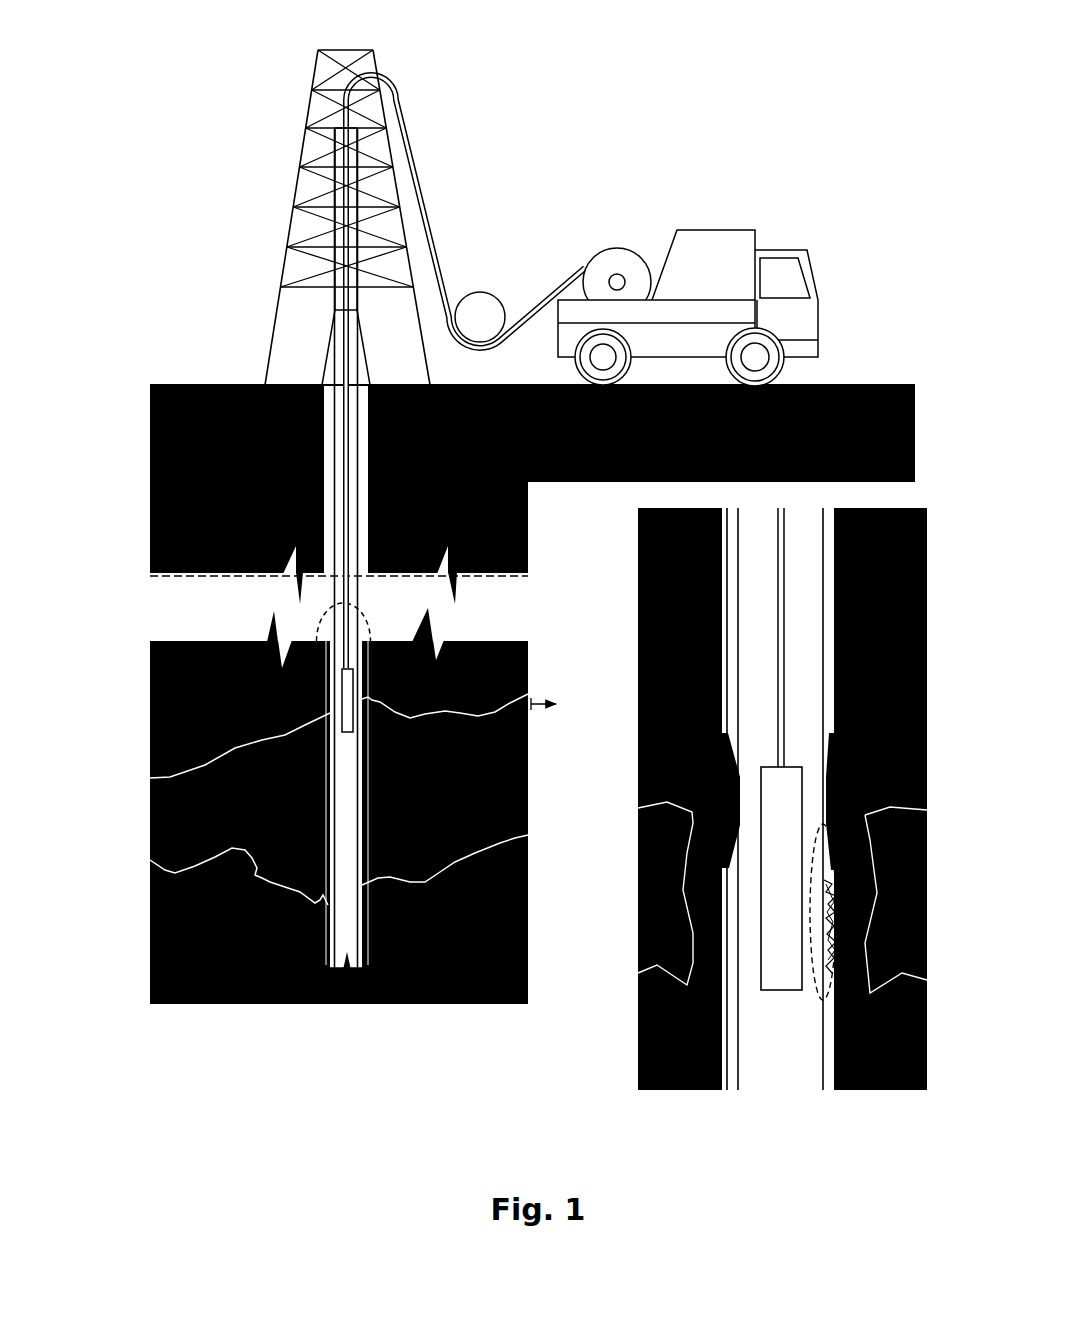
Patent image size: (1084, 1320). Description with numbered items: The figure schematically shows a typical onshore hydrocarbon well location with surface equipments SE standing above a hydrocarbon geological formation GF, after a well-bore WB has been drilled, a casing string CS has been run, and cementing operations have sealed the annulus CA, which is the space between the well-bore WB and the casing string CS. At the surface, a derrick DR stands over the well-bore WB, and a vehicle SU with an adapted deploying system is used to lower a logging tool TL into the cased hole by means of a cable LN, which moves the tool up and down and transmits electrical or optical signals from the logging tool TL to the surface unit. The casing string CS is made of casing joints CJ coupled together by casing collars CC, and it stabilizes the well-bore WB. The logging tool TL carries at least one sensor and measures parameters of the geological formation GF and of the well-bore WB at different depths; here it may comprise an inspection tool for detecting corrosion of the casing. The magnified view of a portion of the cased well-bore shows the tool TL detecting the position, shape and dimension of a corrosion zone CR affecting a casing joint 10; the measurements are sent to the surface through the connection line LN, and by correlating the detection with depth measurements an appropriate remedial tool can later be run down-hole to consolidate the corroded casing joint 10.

The surface equipments SE is at (560, 112).
The derrick DR is at (298, 140).
The cable LN is at (452, 252).
The vehicle SU is at (684, 236).
The well-bore WB is at (174, 385).
The annulus CA is at (150, 500).
The logging tool TL is at (336, 678).
The hydrocarbon geological formation GF is at (150, 776).
The casing CJ is at (150, 910).
The casing string CS is at (328, 1005).
The cement CC is at (638, 752).
The corrosion zone CR is at (808, 876).
The casing joint 10 is at (638, 984).